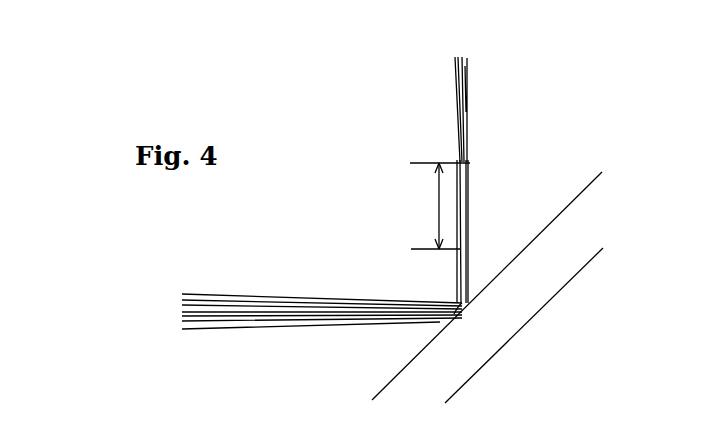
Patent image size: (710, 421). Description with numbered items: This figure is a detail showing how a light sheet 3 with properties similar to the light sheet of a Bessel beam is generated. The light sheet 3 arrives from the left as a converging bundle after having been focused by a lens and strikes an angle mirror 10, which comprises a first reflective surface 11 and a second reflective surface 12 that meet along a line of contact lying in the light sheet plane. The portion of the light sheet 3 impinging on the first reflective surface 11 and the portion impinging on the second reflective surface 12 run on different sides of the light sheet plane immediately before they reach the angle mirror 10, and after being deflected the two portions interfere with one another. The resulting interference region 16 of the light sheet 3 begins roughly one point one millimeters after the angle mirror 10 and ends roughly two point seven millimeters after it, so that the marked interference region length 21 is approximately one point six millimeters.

The light sheet 3 is at (252, 298).
The angle mirror 10 is at (558, 344).
The first reflective surface 11 is at (386, 388).
The second reflective surface 12 is at (587, 190).
The interference region 16 is at (479, 196).
The interference region length 21 is at (438, 210).